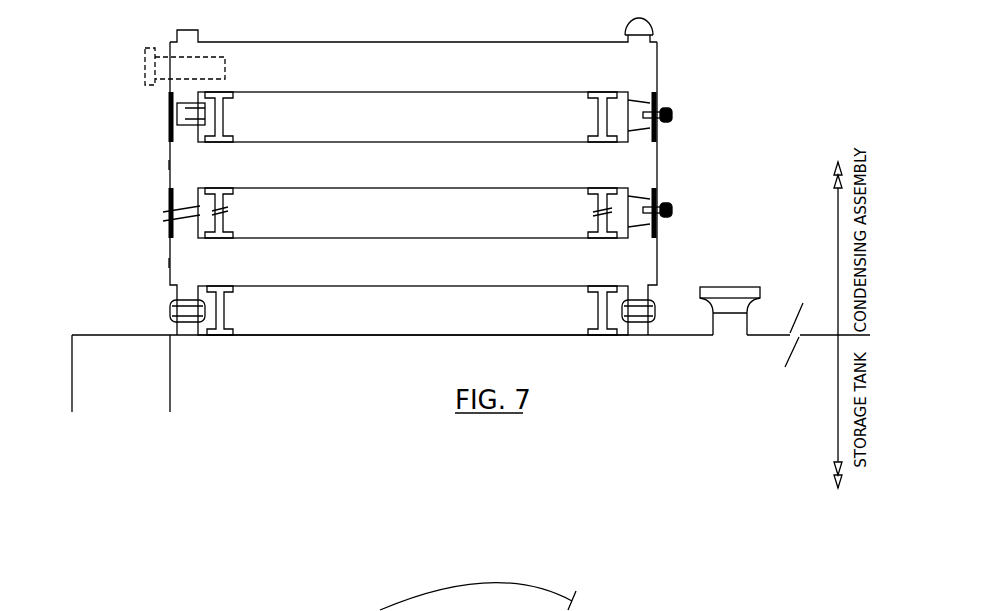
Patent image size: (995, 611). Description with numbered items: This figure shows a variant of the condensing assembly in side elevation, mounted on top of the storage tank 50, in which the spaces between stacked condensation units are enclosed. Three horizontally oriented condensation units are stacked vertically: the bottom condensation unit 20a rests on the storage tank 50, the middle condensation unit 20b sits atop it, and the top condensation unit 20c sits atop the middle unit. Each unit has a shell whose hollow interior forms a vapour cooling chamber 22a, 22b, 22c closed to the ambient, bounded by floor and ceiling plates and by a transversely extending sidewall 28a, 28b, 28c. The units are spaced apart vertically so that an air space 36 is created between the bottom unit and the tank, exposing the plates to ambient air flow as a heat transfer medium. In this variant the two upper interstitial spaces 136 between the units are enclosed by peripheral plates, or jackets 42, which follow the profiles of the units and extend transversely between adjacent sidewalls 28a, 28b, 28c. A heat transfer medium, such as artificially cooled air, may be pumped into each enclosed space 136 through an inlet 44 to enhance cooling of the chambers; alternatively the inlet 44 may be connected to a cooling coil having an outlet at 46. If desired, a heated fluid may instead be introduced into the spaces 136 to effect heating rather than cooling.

The sidewall 28c is at (660, 55).
The top condensation unit 20c is at (668, 67).
The middle condensation unit 20b is at (668, 165).
The bottom condensation unit 20a is at (668, 258).
The vapour cooling chamber 22c is at (353, 92).
The vapour cooling chamber 22b is at (354, 190).
The vapour cooling chamber 22a is at (354, 286).
The sidewall 28b is at (168, 165).
The sidewall 28a is at (168, 263).
The enclosed interstitial space 136 is at (362, 128).
The air space 36 is at (395, 322).
The jacket 42 is at (168, 132).
The inlet 44 is at (672, 115).
The outlet 46 is at (731, 163).
The storage tank 50 is at (752, 412).